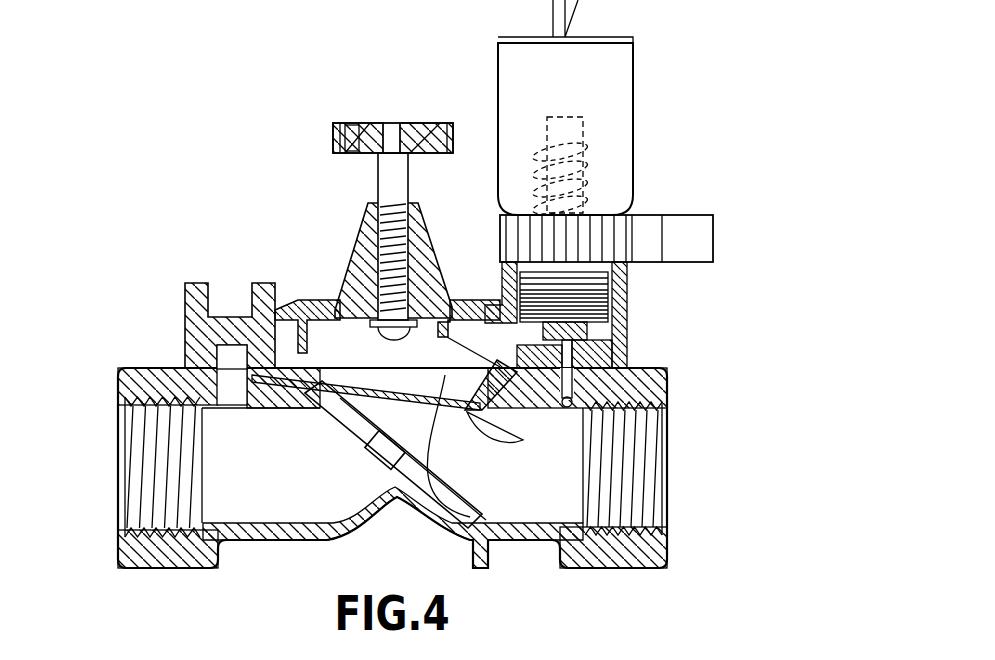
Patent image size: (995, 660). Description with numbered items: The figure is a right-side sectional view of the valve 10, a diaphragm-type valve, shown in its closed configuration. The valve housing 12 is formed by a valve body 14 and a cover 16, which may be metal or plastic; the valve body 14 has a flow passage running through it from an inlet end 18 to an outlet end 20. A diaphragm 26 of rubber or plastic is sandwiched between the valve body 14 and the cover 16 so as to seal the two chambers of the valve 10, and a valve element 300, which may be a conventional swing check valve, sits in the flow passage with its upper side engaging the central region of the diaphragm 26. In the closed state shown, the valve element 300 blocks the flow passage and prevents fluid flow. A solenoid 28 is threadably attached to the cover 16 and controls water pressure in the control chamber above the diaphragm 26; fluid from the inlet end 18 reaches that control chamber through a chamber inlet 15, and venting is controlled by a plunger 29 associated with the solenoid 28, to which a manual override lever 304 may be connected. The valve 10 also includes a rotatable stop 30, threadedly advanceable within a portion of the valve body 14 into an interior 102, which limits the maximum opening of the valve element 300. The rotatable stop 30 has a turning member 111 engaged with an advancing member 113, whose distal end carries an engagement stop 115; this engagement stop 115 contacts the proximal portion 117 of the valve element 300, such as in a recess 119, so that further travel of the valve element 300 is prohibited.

The valve 10 is at (190, 168).
The valve housing 12 is at (272, 243).
The valve body 14 is at (121, 370).
The chamber inlet 15 is at (237, 390).
The cover 16 is at (185, 292).
The inlet end 18 is at (124, 473).
The outlet end 20 is at (668, 460).
The diaphragm 26 is at (508, 450).
The solenoid 28 is at (505, 52).
The plunger 29 is at (563, 138).
The rotatable stop 30 is at (333, 127).
The interior 102 is at (343, 333).
The turning member 111 is at (353, 123).
The advancing member 113 is at (382, 230).
The engagement stop 115 is at (448, 310).
The proximal portion 117 is at (440, 405).
The recess 119 is at (390, 383).
The valve element 300 is at (498, 494).
The manual override lever 304 is at (686, 258).